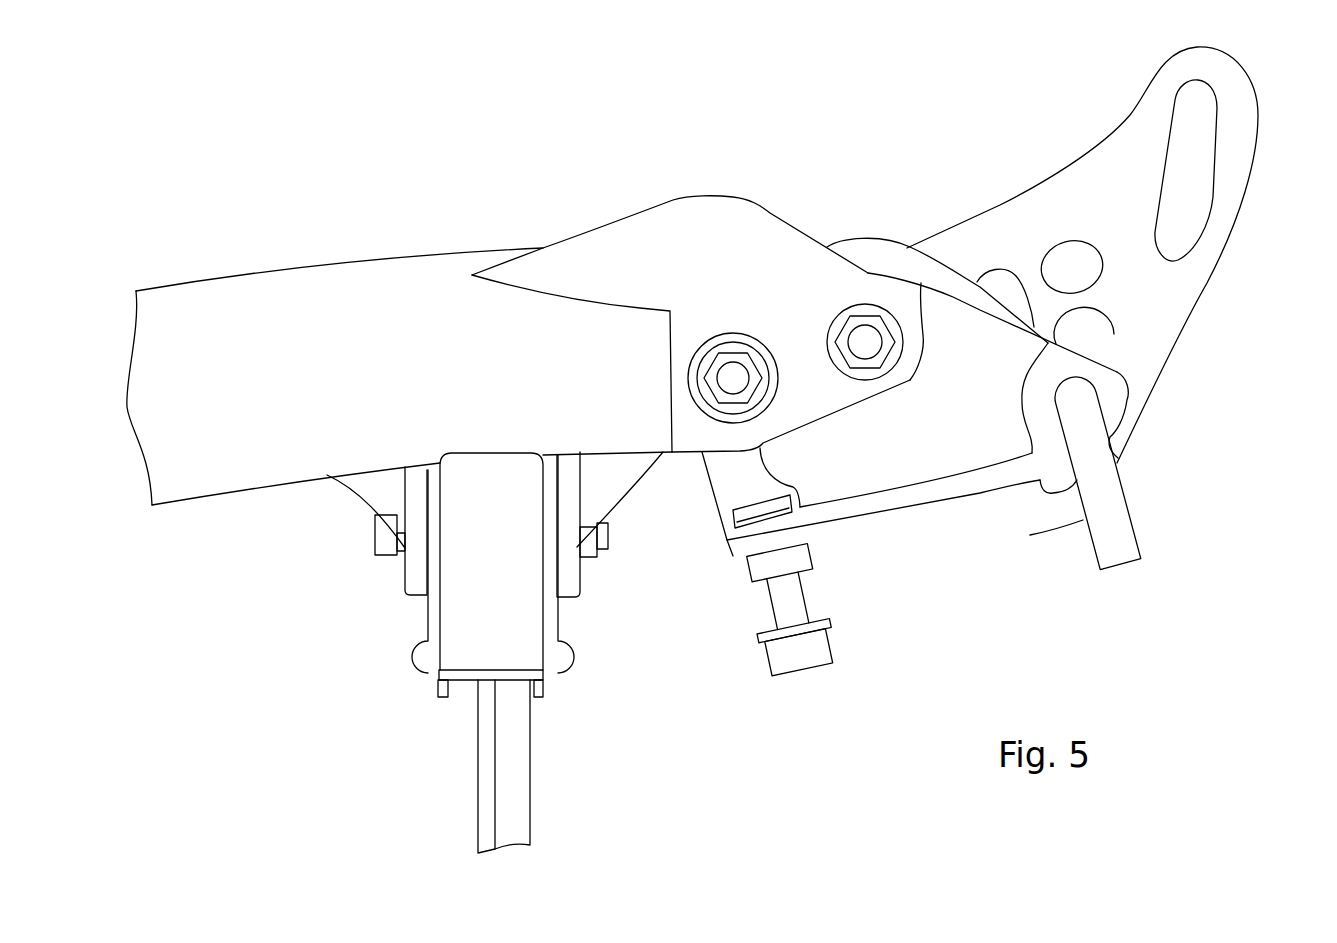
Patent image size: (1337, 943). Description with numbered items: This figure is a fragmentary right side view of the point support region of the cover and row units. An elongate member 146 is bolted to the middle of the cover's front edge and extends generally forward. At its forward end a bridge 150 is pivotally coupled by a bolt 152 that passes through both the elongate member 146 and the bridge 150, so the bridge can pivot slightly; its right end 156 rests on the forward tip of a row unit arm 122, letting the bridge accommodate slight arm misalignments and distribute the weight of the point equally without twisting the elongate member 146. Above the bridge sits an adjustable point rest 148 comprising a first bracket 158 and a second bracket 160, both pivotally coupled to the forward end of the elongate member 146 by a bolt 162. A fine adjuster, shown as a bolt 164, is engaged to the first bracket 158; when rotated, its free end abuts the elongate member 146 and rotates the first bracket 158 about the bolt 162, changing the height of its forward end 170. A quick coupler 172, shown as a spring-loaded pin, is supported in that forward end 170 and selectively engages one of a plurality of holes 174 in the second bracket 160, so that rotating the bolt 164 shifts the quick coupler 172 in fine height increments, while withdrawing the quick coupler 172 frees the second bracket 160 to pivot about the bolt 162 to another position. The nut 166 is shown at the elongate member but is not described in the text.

The arm 122 is at (520, 750).
The elongate member 146 is at (294, 381).
The adjustable point rest 148 is at (939, 165).
The bridge 150 is at (485, 585).
The bolt 152 is at (377, 537).
The right end 156 is at (497, 652).
The first bracket 158 is at (898, 470).
The second bracket 160 is at (1200, 273).
The bolt 162 is at (860, 340).
The fine adjuster 164 is at (837, 647).
The nut 166 is at (733, 373).
The forward end 170 is at (1113, 388).
The quick coupler 172 is at (1128, 543).
The holes 174 is at (1110, 308).